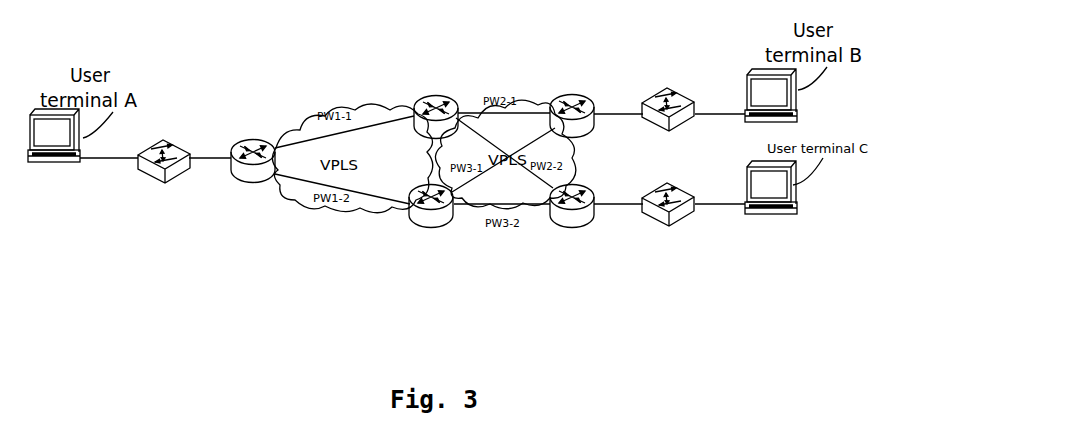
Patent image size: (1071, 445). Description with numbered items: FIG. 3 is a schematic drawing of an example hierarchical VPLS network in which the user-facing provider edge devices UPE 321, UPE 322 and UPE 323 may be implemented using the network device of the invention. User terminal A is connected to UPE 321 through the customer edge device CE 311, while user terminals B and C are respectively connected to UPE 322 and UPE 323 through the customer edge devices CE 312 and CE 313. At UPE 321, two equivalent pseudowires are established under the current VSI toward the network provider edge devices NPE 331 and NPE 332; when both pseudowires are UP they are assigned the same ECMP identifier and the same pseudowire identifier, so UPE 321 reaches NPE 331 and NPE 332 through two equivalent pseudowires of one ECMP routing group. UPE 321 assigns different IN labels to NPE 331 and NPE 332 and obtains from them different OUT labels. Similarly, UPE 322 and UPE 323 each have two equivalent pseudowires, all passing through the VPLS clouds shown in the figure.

The CE 311 is at (165, 138).
The CE 312 is at (683, 90).
The CE 313 is at (683, 187).
The UPE 321 is at (285, 115).
The UPE 322 is at (610, 72).
The UPE 323 is at (570, 230).
The NPE 331 is at (487, 75).
The NPE 332 is at (437, 228).